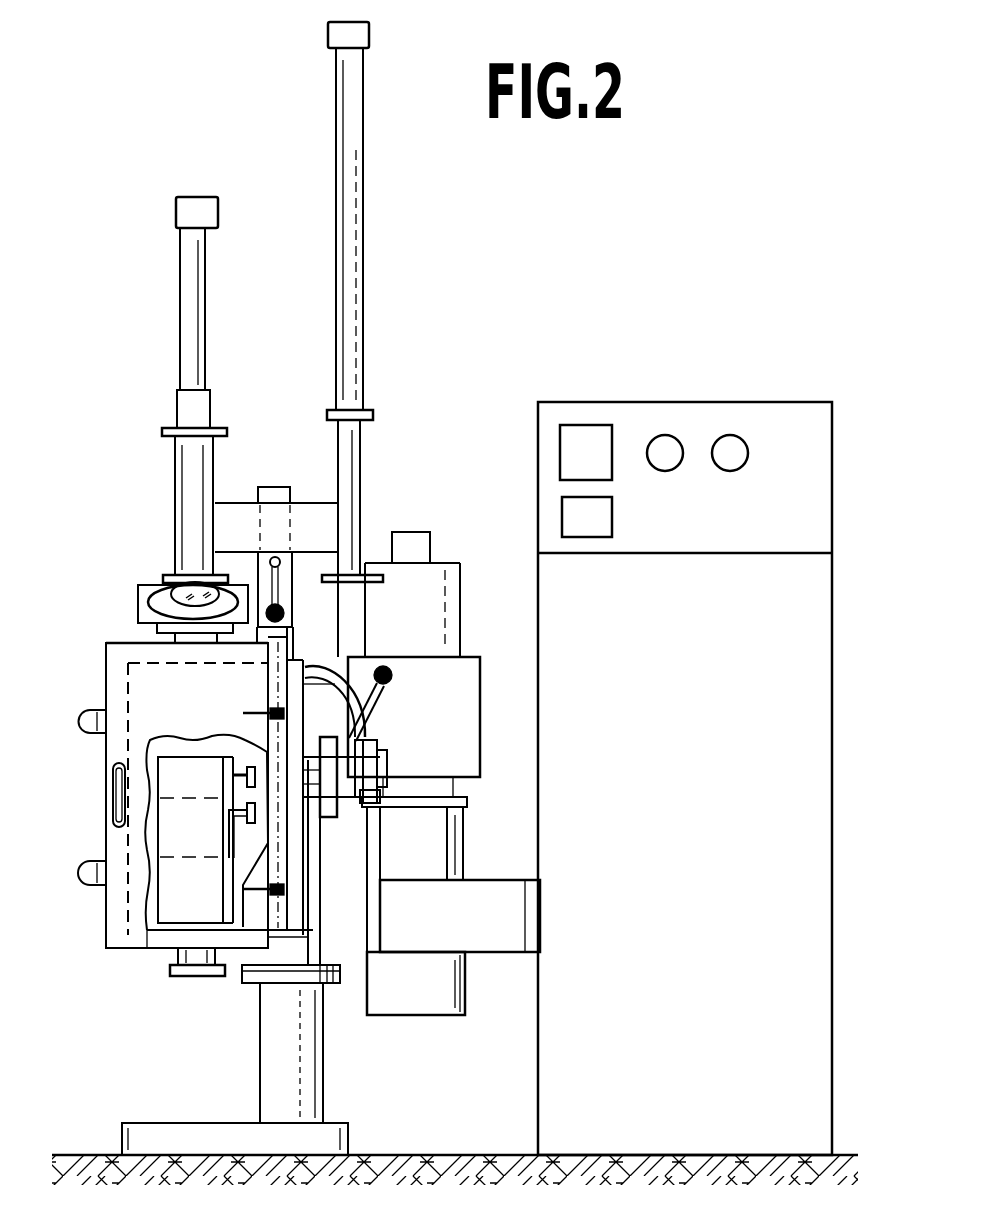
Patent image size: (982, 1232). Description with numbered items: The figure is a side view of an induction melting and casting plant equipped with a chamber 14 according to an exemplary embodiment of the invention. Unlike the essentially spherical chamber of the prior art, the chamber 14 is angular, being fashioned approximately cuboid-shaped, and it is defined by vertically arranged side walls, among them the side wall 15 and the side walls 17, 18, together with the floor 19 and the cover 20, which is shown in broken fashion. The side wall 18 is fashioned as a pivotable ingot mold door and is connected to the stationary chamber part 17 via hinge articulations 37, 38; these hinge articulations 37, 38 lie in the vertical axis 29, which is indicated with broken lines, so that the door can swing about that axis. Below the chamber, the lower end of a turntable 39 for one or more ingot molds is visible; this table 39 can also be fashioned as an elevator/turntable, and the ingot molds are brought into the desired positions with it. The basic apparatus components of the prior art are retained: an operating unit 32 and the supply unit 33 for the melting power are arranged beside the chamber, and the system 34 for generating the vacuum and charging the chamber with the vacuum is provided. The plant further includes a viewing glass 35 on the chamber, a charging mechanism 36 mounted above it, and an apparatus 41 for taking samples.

The chamber 14 is at (104, 752).
The side wall 15 is at (106, 840).
The stationary chamber part 17 is at (308, 826).
The side wall fashioned as door 18 is at (157, 700).
The floor 19 is at (133, 950).
The cover 20 is at (140, 643).
The vertical axis 29 is at (284, 845).
The operating unit 32 is at (752, 425).
The supply unit for the melting power 33 is at (806, 640).
The system for generating the vacuum 34 is at (437, 1020).
The viewing glass 35 is at (178, 593).
The charging mechanism 36 is at (190, 466).
The hinge articulation 37 is at (284, 708).
The hinge articulation 38 is at (284, 897).
The turntable 39 is at (183, 977).
The apparatus for taking samples 41 is at (355, 452).